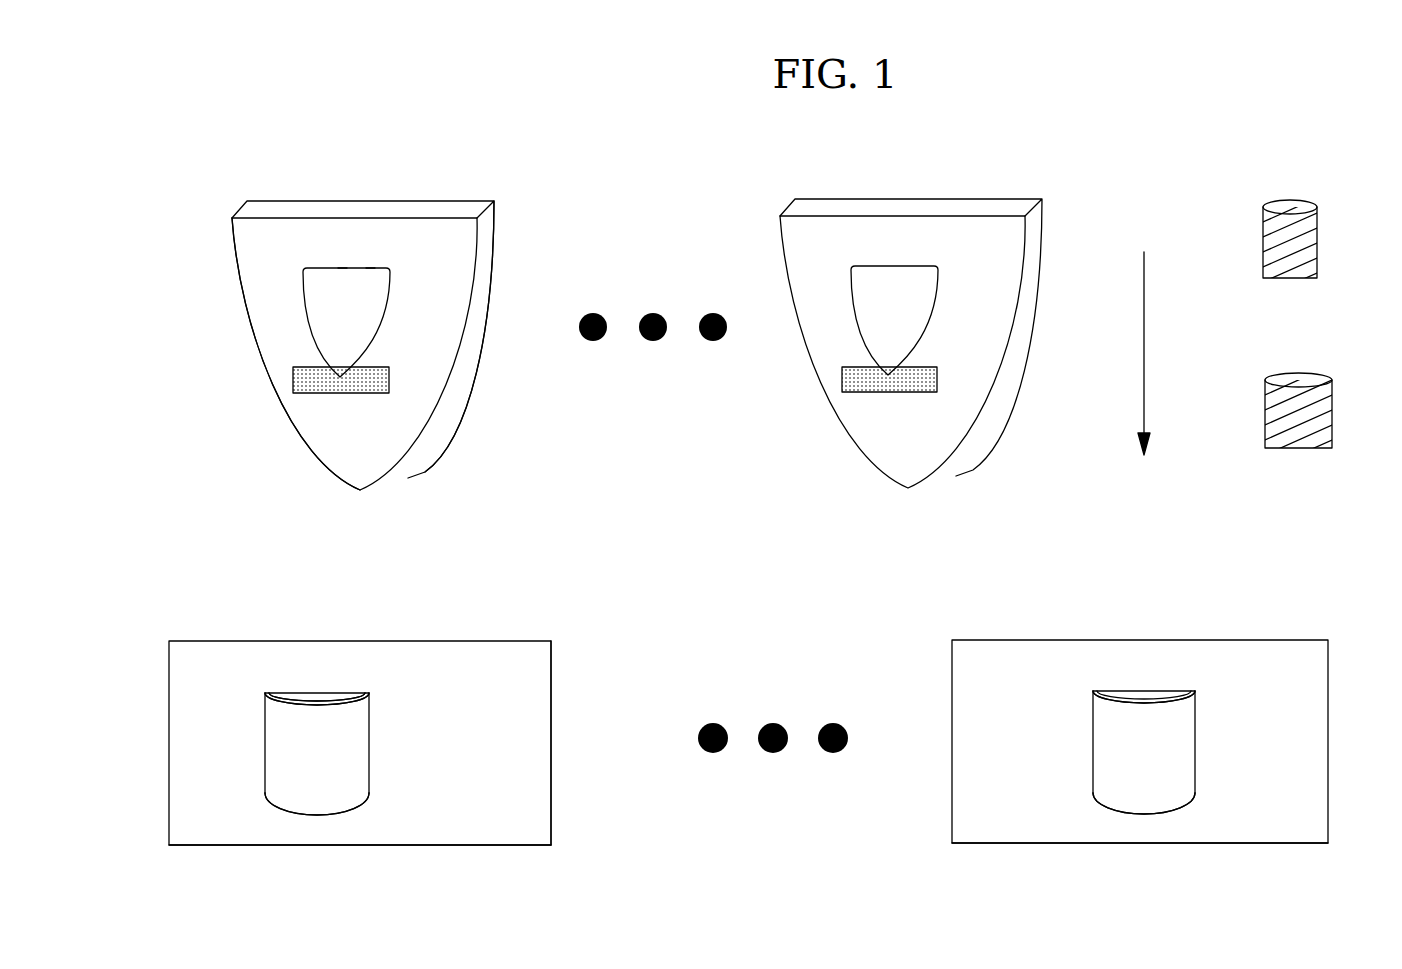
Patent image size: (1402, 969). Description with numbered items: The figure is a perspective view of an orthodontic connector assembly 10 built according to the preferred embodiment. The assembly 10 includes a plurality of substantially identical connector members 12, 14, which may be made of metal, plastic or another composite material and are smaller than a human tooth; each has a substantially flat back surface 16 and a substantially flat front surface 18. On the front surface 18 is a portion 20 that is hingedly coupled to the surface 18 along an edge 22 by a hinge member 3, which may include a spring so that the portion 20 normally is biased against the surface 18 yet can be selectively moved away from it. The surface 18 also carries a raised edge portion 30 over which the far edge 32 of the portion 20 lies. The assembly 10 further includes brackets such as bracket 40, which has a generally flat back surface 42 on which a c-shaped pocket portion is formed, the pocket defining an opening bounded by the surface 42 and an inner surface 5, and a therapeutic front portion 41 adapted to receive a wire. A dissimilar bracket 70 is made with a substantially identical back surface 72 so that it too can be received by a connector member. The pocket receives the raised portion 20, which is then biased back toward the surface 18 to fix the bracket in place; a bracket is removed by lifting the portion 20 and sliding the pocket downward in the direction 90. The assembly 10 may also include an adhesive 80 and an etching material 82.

The orthodontic connector assembly 10 is at (1220, 120).
The connector member 12 is at (410, 479).
The connector member 14 is at (900, 485).
The back surface 16 is at (493, 260).
The front surface 18 is at (263, 263).
The portion 20 is at (328, 320).
The edge 22 is at (342, 267).
The hinge member 3 is at (370, 267).
The raised edge portion 30 is at (307, 382).
The far edge 32 is at (842, 378).
The bracket 40 is at (393, 640).
The front portion 41 is at (553, 723).
The back surface 42 is at (500, 787).
The inner surface 5 is at (330, 703).
The bracket 70 is at (1267, 608).
The back surface 72 is at (1283, 797).
The adhesive 80 is at (1300, 250).
The etching material 82 is at (1325, 410).
The direction 90 is at (1144, 335).